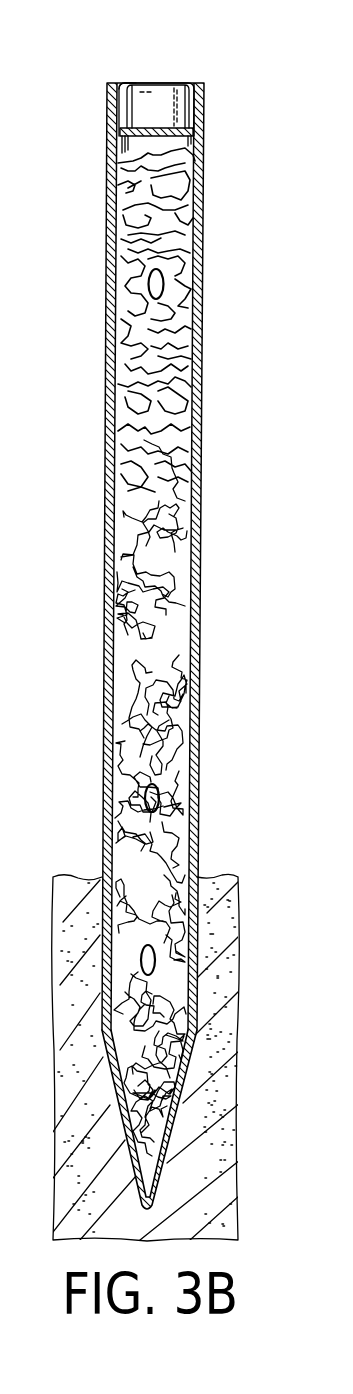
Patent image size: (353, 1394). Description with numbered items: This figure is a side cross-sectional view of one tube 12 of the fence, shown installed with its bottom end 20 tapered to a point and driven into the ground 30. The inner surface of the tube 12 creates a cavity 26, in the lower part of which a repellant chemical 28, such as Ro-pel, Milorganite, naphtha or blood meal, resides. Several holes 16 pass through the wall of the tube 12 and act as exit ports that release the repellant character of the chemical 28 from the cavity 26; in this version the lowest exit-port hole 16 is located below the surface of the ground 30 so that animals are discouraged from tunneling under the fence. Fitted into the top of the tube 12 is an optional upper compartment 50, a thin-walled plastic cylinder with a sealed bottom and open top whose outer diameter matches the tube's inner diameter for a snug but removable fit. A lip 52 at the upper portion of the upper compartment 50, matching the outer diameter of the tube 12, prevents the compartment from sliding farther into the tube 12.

The tube 12 is at (195, 674).
The holes 16 is at (165, 283).
The bottom end 20 is at (163, 1165).
The cavity 26 is at (124, 148).
The chemical 28 is at (183, 447).
The ground 30 is at (233, 912).
The upper compartment 50 is at (193, 132).
The lip 52 is at (119, 83).